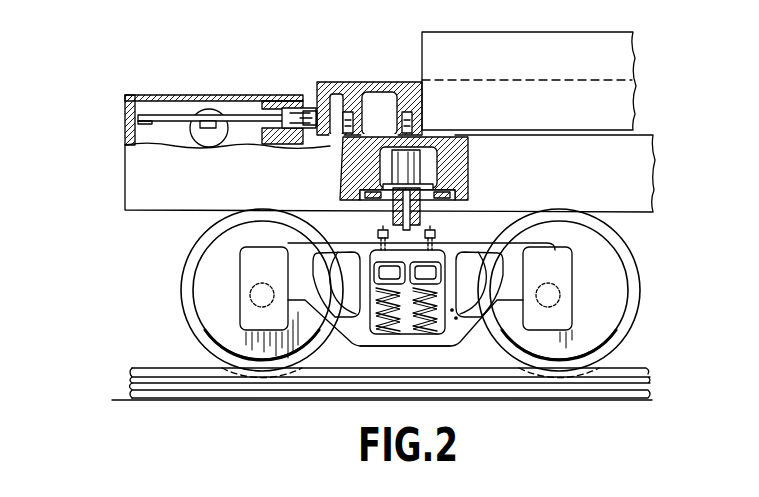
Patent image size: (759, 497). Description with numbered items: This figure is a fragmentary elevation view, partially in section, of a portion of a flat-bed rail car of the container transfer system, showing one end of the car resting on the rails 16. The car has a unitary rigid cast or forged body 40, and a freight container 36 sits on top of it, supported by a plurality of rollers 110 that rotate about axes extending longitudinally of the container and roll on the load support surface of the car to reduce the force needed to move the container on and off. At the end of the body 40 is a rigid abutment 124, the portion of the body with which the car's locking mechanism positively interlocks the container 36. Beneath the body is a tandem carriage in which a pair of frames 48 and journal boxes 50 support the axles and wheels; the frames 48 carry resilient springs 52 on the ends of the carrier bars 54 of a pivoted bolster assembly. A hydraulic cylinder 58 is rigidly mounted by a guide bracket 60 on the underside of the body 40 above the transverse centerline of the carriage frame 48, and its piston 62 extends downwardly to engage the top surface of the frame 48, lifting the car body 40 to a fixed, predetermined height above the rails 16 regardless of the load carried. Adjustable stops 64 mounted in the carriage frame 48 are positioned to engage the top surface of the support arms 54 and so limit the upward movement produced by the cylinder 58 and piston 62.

The tracks 16 is at (157, 368).
The freight container 36 is at (636, 74).
The rail car body 40 is at (169, 213).
The carriage frame 48 is at (458, 332).
The journal box 50 is at (242, 290).
The resilient spring 52 is at (398, 323).
The carrier bar 54 is at (441, 267).
The hydraulic cylinder 58 is at (416, 163).
The guide bracket 60 is at (348, 186).
The piston 62 is at (470, 194).
The adjustable stop 64 is at (380, 228).
The roller 110 is at (346, 82).
The rigid abutment 124 is at (196, 103).